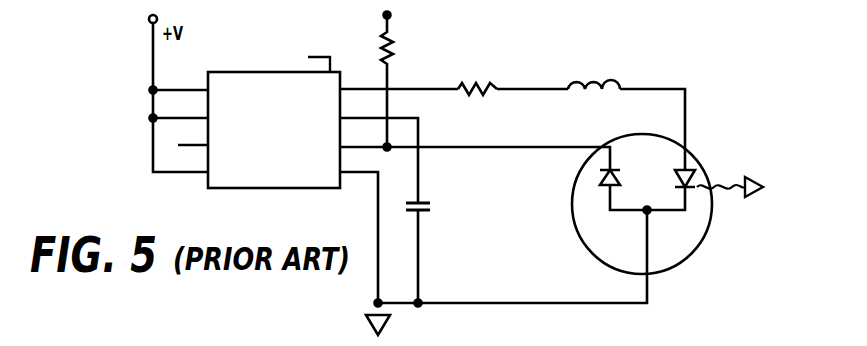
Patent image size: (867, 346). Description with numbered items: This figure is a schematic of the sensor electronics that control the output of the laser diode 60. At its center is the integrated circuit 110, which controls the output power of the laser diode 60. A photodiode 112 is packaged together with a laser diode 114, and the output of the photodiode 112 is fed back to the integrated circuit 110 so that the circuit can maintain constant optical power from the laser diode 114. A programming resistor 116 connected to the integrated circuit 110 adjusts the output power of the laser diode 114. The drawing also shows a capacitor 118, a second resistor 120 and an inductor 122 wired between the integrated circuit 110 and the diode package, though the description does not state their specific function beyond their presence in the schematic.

The laser diode 60 is at (698, 160).
The integrated circuit 110 is at (274, 133).
The photodiode 112 is at (624, 212).
The laser diode 114 is at (671, 212).
The programming resistor 116 is at (407, 77).
The capacitor C1 118 is at (439, 212).
The resistor R5 120 is at (478, 67).
The inductor L1 122 is at (594, 59).